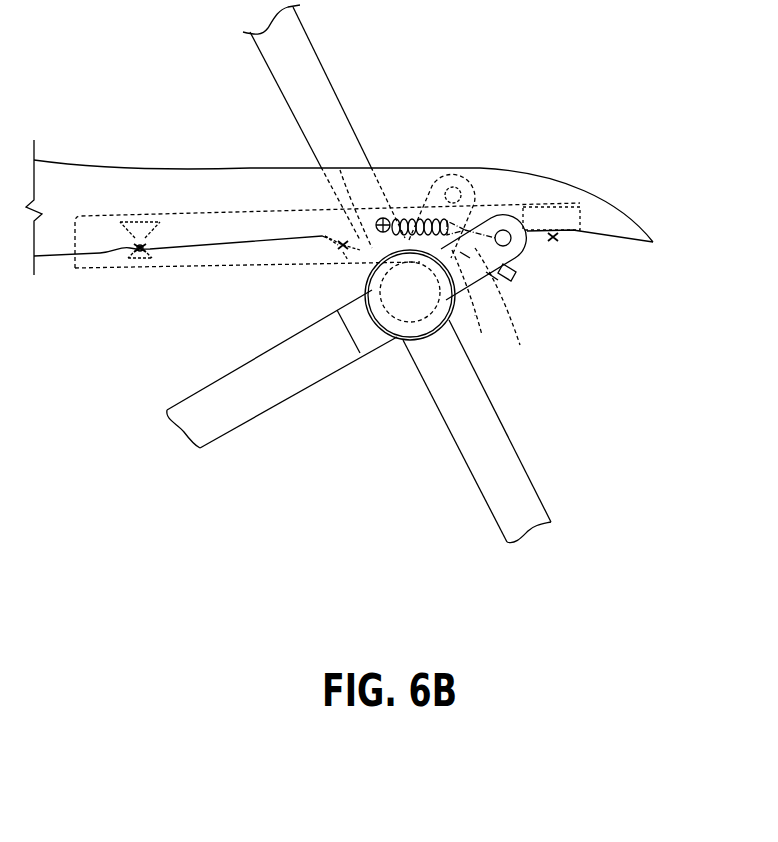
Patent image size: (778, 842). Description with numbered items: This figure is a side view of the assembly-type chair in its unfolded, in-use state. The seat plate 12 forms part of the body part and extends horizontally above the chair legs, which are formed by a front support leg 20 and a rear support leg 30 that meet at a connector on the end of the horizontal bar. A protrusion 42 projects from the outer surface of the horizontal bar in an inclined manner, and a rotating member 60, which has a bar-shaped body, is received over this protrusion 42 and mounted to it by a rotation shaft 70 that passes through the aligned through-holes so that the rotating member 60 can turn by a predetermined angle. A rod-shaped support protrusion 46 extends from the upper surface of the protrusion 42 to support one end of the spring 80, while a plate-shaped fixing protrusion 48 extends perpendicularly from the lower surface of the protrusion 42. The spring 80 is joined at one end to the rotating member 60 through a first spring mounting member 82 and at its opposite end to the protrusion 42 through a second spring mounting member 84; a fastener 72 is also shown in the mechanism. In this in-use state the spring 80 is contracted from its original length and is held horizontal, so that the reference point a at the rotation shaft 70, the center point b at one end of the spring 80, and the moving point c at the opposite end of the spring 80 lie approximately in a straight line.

The seat plate 12 is at (598, 187).
The front support legs 20 is at (495, 400).
The rear support legs 30 is at (240, 372).
The protrusion 42 is at (490, 278).
The support protrusion 46 is at (470, 258).
The fixing protrusion 48 is at (523, 263).
The rotating member 60 is at (223, 268).
The rotation shaft 70 is at (521, 216).
The fastener 72 is at (353, 250).
The spring 80 is at (416, 220).
The first spring mounting member 82 is at (389, 218).
The second spring mounting member 84 is at (471, 222).
The reference point a is at (565, 238).
The center point b is at (475, 315).
The moving point c is at (383, 217).